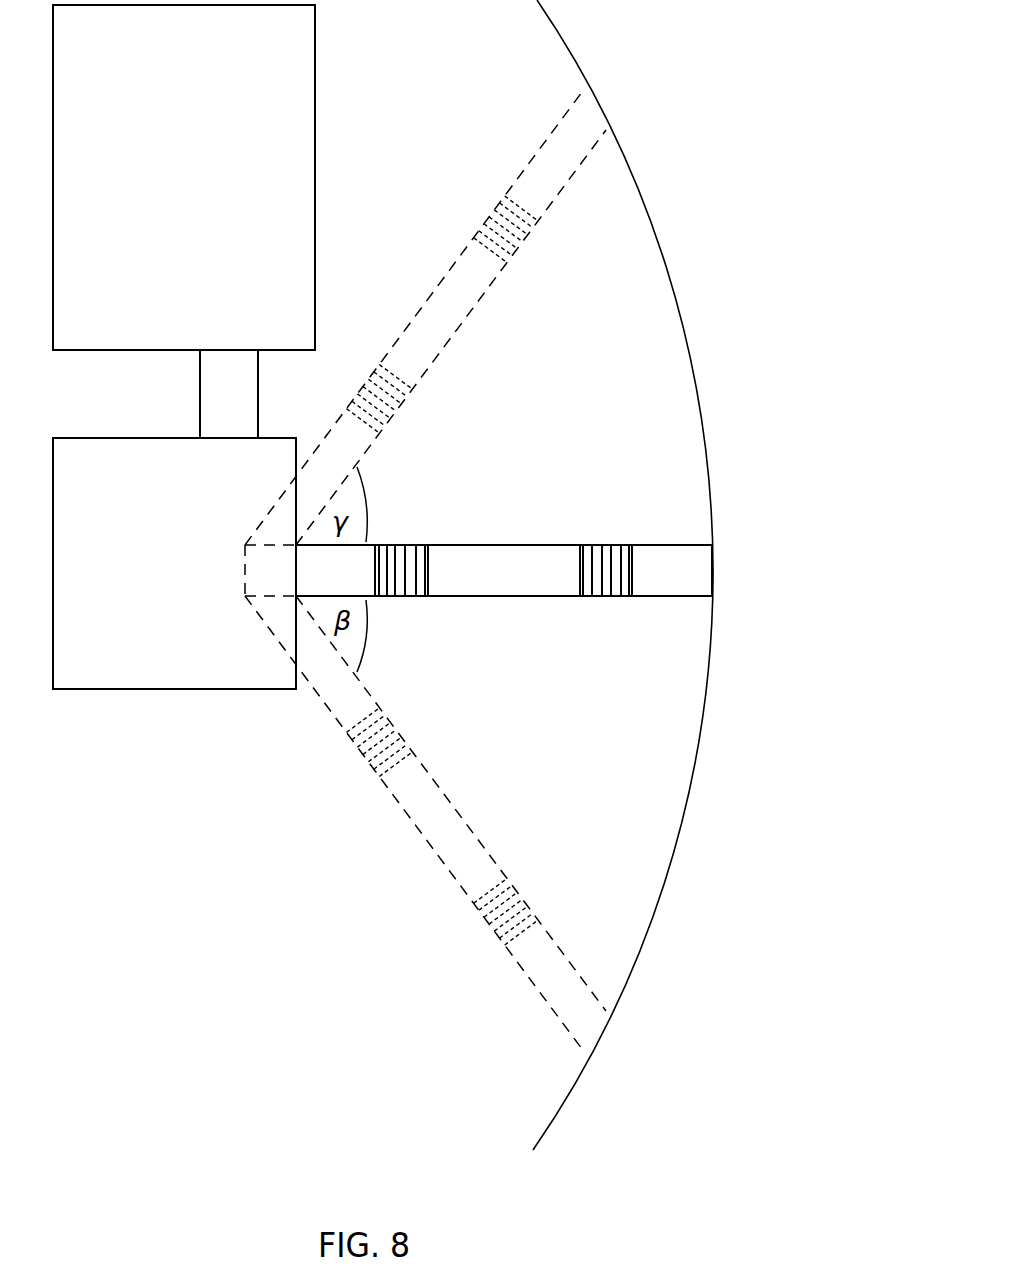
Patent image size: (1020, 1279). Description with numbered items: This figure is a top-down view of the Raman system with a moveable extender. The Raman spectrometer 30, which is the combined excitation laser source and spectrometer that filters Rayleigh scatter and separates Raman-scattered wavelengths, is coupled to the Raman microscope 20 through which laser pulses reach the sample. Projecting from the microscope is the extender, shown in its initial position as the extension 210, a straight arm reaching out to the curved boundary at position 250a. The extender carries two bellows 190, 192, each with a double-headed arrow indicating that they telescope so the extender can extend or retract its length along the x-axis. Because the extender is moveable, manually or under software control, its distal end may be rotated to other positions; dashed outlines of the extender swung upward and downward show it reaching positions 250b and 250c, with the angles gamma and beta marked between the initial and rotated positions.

The combined excitation laser source/spectrometer 30 is at (169, 249).
The optical microscope 20 is at (132, 631).
The extension 210 is at (668, 545).
The bellows 190 is at (374, 612).
The bellows 192 is at (579, 610).
The extender position 250a is at (732, 566).
The extender position 250b is at (618, 94).
The extender position 250c is at (616, 1042).